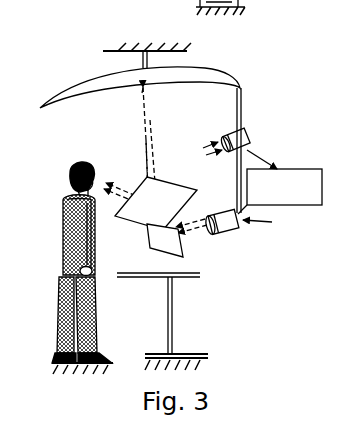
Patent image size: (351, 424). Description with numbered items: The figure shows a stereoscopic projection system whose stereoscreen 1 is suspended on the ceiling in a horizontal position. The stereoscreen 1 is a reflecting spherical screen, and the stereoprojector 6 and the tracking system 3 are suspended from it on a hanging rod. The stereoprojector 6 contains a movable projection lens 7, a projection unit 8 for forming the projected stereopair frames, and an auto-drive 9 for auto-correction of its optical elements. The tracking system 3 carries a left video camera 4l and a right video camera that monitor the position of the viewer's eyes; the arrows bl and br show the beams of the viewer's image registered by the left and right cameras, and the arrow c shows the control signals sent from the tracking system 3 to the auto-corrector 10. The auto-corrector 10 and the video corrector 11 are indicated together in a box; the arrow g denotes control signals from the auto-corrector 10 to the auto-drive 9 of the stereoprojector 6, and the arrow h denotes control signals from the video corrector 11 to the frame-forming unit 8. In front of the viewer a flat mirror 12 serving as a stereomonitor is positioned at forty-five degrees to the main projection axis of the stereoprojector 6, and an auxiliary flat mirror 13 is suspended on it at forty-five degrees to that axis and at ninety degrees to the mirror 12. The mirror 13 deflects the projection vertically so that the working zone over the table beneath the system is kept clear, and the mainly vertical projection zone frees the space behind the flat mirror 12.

The stereoscreen 1 is at (222, 75).
The tracking system 3 is at (255, 123).
The left video camera 4l is at (255, 123).
The stereoprojector 6 is at (270, 242).
The movable projection lens 7 is at (270, 242).
The projection unit 8 is at (270, 242).
The auto-drive 9 is at (233, 225).
The auto-corrector 10 is at (280, 191).
The video corrector 11 is at (280, 191).
The flat mirror 12 is at (140, 182).
The auxiliary flat mirror 13 is at (181, 243).
The beams registered by the left video camera bl is at (196, 137).
The beams registered by the right video camera br is at (198, 164).
The control signals of the tracking system c is at (262, 153).
The control signals to the stereoprojector auto-drives g is at (275, 224).
The control signals to the frame-forming units h is at (275, 224).